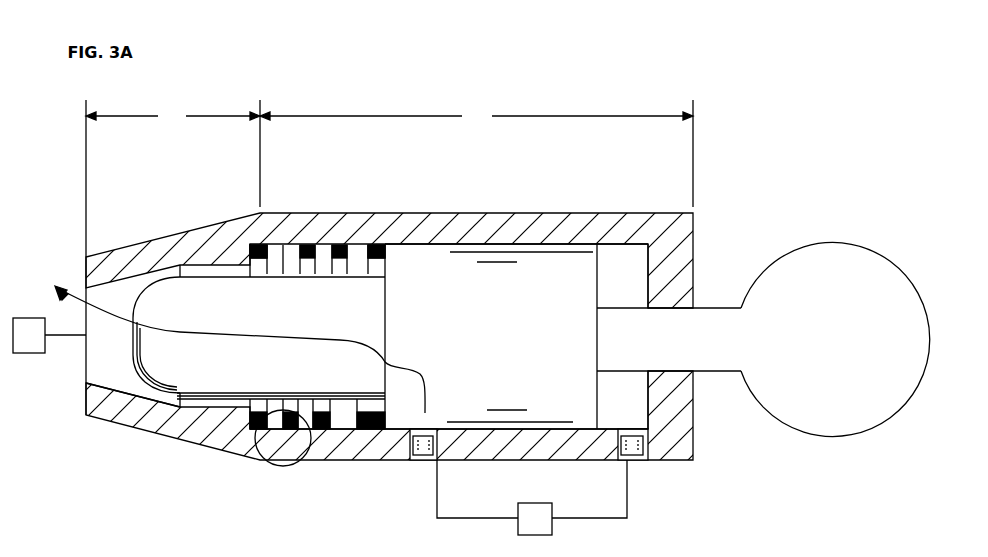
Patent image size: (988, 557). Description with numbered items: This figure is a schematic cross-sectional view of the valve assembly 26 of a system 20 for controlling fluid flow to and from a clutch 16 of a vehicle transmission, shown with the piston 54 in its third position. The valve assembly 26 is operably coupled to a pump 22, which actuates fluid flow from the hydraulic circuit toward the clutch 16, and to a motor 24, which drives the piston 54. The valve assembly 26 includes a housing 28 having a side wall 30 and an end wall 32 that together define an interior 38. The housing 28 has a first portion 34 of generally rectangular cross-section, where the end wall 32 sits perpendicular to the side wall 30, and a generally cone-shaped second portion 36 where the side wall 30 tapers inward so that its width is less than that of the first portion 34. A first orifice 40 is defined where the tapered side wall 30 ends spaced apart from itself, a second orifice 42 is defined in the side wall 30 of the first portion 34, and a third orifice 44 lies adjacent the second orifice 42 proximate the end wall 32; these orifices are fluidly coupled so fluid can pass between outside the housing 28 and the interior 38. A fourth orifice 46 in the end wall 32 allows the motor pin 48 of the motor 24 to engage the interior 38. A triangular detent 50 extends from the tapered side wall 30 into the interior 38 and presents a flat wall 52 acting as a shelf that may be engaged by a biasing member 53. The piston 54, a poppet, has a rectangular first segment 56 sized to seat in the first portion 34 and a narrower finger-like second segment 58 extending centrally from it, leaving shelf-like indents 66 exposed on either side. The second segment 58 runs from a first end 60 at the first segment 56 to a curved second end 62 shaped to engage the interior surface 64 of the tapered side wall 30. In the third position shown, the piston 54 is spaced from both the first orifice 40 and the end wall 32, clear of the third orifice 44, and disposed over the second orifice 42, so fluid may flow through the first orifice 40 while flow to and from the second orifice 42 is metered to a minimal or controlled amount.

The clutch 16 is at (526, 529).
The system 20 is at (602, 76).
The pump 22 is at (20, 346).
The motor 24 is at (827, 260).
The valve assembly 26 is at (516, 207).
The housing 28 is at (445, 227).
The side wall 30 is at (350, 450).
The end wall 32 is at (697, 255).
The first portion 34 is at (572, 218).
The second portion 36 is at (173, 153).
The interior 38 is at (607, 285).
The first orifice 40 is at (84, 317).
The second orifice 42 is at (413, 462).
The third orifice 44 is at (638, 462).
The fourth orifice 46 is at (697, 306).
The motor pin 48 is at (707, 365).
The detent 50 is at (252, 418).
The flat wall 52 is at (243, 256).
The biasing member 53 is at (309, 425).
The piston 54 is at (463, 390).
The first segment 56 is at (556, 403).
The second segment 58 is at (216, 372).
The first end 60 is at (385, 335).
The second end 62 is at (132, 348).
The interior surface 64 is at (190, 409).
The shelf-like indents 66 is at (380, 270).